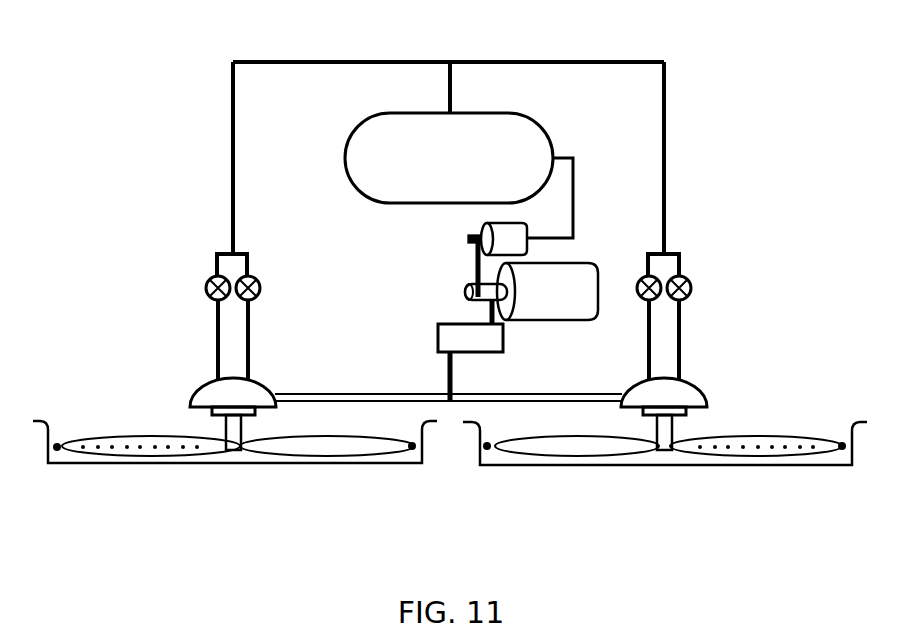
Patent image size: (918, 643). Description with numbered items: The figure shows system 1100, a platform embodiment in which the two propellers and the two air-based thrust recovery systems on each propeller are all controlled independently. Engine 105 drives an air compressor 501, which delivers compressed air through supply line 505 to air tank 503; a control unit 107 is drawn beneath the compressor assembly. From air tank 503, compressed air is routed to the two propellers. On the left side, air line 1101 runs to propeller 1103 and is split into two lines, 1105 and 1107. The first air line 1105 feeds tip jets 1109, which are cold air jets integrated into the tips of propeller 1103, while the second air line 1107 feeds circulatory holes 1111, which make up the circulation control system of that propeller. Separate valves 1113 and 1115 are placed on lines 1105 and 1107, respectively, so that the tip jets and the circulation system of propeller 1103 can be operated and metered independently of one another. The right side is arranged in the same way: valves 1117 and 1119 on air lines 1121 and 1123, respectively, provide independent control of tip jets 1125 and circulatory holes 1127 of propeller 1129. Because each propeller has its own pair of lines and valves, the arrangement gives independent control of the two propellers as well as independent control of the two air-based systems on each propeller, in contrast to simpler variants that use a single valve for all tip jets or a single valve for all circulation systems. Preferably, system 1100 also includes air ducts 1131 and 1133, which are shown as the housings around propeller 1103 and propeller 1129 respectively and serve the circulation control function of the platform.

The system 1100 is at (716, 117).
The air line 1101 is at (233, 175).
The air tank 503 is at (431, 167).
The supply line 505 is at (573, 216).
The air compressor 501 is at (507, 238).
The engine 105 is at (548, 293).
The controller 107 is at (438, 337).
The valve 1113 is at (206, 288).
The valve 1115 is at (260, 288).
The air line 1105 is at (216, 337).
The air line 1107 is at (250, 337).
The valve 1117 is at (656, 297).
The valve 1119 is at (691, 288).
The air line 1121 is at (652, 330).
The air line 1123 is at (681, 360).
The air duct 1131 is at (283, 465).
The propeller 1103 is at (320, 446).
The circulatory holes 1111 is at (183, 445).
The tip jets 1109 is at (57, 450).
The air duct 1133 is at (622, 466).
The propeller 1129 is at (580, 448).
The circulatory holes 1127 is at (715, 446).
The tip jets 1125 is at (488, 450).